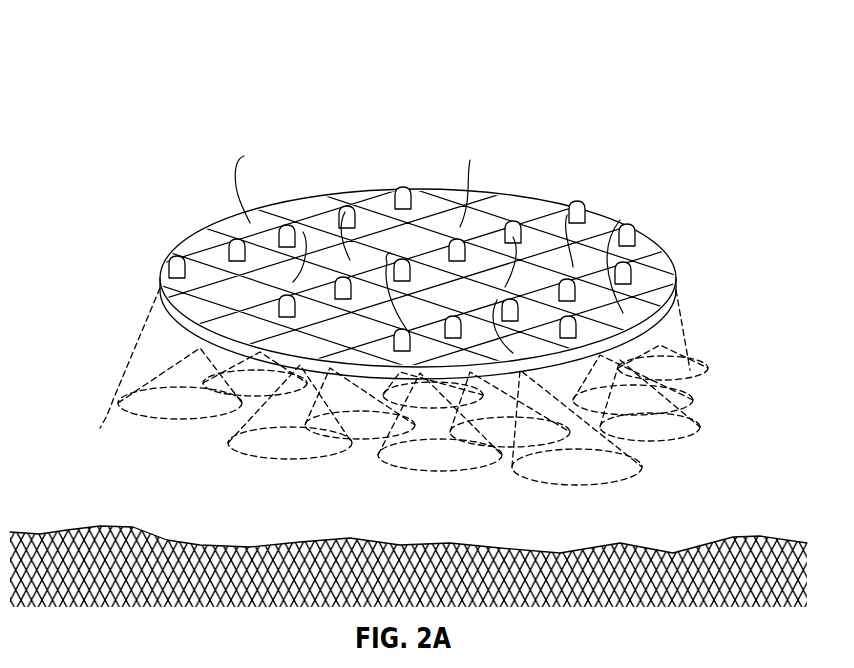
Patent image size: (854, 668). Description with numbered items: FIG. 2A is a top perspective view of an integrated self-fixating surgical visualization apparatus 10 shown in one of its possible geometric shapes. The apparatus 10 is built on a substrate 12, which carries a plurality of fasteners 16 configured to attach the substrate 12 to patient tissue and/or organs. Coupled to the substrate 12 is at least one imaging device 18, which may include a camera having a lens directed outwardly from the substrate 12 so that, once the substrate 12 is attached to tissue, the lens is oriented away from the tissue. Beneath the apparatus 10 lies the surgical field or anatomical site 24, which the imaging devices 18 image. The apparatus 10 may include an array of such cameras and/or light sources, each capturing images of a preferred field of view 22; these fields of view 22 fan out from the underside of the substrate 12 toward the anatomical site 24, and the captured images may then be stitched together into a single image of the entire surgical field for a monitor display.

The surgical visualization apparatus 10 is at (628, 89).
The substrate 12 is at (203, 234).
The fasteners 16 is at (520, 207).
The imaging device 18 is at (572, 207).
The fields of view 22 is at (120, 418).
The anatomical site 24 is at (172, 526).